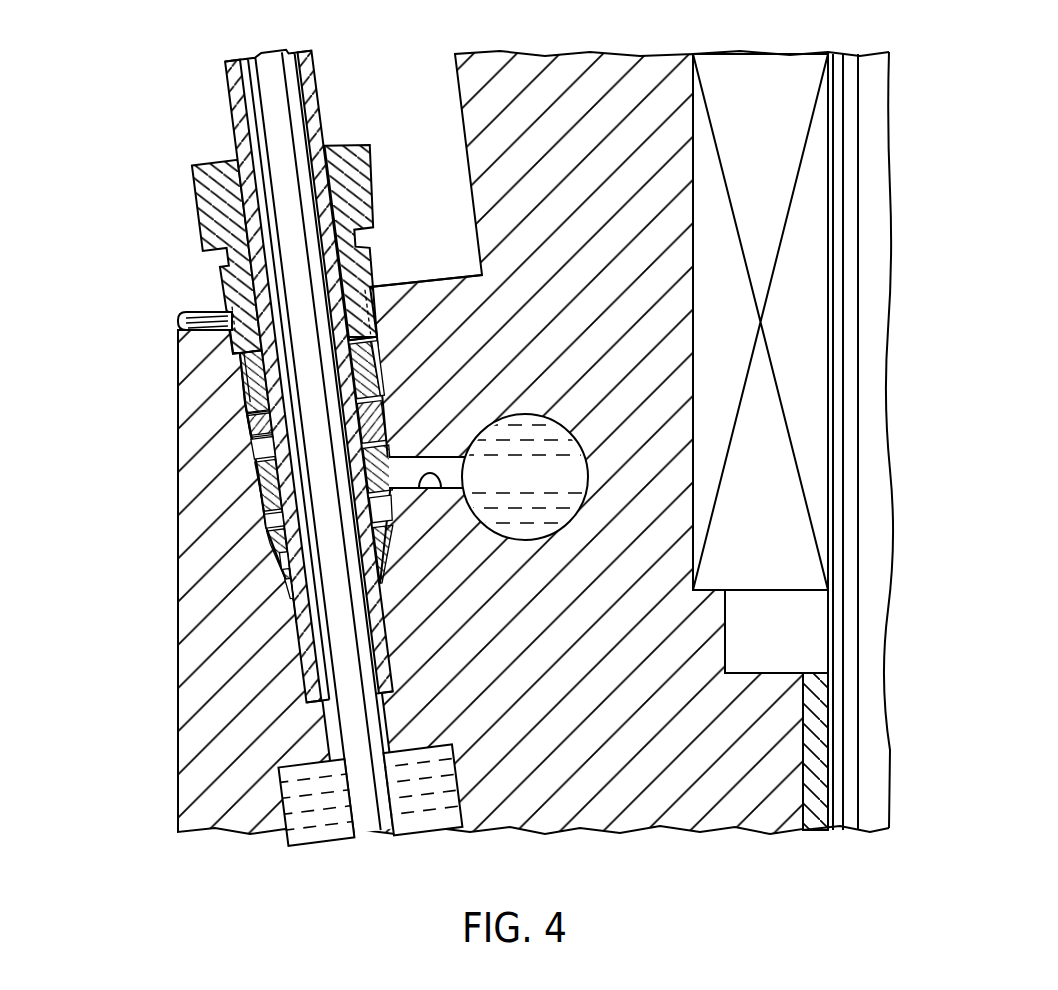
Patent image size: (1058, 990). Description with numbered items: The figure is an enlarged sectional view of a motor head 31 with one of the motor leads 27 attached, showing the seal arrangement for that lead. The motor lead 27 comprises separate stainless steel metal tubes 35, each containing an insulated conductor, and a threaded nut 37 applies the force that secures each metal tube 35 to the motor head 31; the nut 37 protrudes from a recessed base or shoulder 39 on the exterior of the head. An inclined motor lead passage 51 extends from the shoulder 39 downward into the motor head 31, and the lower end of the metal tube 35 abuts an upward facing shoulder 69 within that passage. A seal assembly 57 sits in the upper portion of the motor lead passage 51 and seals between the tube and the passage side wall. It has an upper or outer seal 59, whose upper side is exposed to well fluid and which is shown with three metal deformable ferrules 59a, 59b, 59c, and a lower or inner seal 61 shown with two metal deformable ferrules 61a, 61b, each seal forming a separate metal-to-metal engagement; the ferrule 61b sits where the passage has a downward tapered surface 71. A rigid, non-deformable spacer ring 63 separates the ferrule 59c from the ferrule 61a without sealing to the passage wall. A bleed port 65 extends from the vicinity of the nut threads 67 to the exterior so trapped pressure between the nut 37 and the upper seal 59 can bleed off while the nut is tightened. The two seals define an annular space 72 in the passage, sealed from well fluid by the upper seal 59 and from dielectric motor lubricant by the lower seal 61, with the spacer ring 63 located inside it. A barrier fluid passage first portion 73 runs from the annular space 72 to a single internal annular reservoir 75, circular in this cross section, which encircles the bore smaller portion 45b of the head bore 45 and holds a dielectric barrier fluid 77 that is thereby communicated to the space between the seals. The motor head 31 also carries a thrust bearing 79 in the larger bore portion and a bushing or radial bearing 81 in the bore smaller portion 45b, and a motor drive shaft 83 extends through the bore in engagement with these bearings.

The motor lead 27 is at (322, 67).
The motor head 31 is at (585, 60).
The metal tube 35 is at (237, 103).
The threaded nut 37 is at (192, 195).
The shoulder 39 is at (453, 283).
The bore 45 is at (693, 197).
The bore smaller portion 45b is at (728, 640).
The motor lead passage 51 is at (312, 690).
The seal assembly 57 is at (385, 373).
The upper seal 59 is at (242, 400).
The upper seal ferrule 59a is at (267, 377).
The upper seal ferrule 59b is at (268, 428).
The upper seal ferrule 59c is at (270, 445).
The lower seal 61 is at (258, 550).
The lower seal ferrule 61a is at (290, 553).
The lower seal ferrule 61b is at (300, 598).
The spacer ring 63 is at (272, 493).
The bleed port 65 is at (205, 336).
The nut threads 67 is at (212, 322).
The upward facing shoulder 69 is at (325, 700).
The downward tapered surface 71 is at (303, 585).
The annular space 72 is at (275, 520).
The barrier fluid passage first portion 73 is at (432, 476).
The reservoir 75 is at (530, 481).
The dielectric barrier fluid 77 is at (550, 503).
The thrust bearing 79 is at (817, 187).
The radial bearing 81 is at (815, 684).
The motor drive shaft 83 is at (868, 318).